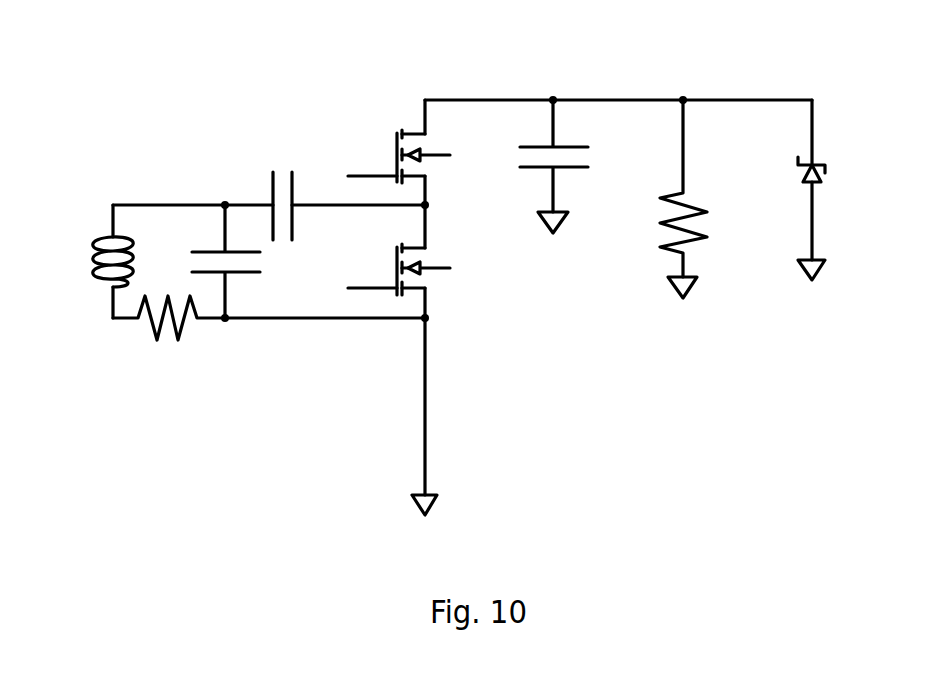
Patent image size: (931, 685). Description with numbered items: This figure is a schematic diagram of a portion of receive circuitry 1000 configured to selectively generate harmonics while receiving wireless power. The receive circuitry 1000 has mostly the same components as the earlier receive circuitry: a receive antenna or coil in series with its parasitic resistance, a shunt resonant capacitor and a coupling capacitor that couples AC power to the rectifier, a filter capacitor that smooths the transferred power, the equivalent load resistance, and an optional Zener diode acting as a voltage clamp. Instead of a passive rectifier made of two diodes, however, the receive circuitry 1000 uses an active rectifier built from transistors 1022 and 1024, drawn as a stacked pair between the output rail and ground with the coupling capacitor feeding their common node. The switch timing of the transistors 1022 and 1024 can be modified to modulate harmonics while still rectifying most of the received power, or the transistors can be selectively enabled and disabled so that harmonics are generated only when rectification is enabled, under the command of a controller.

The receive circuitry 1000 is at (447, 267).
The transistor 1022 is at (433, 148).
The transistor 1024 is at (433, 262).